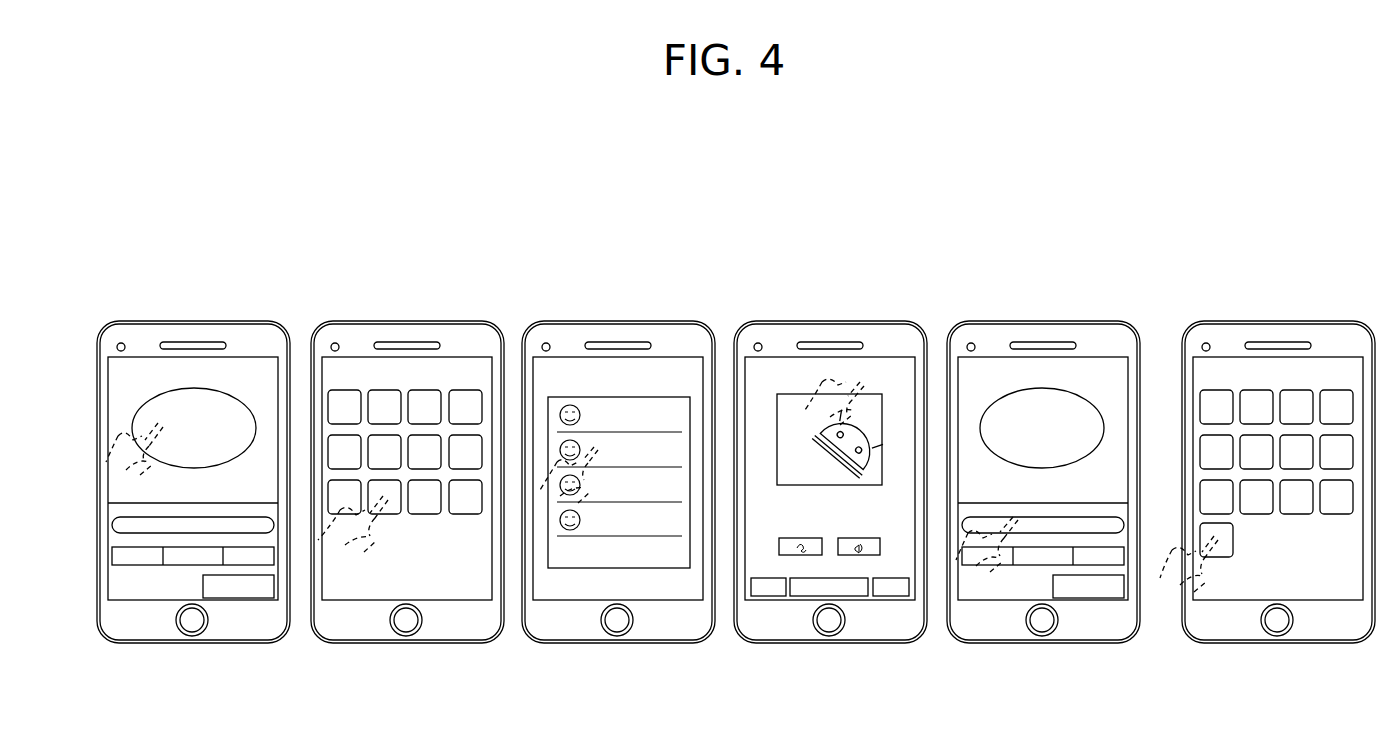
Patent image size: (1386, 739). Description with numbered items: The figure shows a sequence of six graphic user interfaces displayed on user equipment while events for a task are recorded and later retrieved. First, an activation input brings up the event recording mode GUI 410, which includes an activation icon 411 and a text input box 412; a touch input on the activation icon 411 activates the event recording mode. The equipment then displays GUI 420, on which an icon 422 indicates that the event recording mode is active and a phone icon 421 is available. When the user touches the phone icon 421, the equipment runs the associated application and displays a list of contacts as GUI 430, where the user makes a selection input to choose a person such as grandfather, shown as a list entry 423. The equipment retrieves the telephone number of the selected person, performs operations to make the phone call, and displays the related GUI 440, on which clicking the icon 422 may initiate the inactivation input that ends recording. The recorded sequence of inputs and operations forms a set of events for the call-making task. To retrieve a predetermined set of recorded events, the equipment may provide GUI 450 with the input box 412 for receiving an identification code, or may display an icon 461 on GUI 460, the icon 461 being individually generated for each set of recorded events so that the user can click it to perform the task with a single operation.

The event recording mode GUI 410 is at (232, 321).
The activation icon 411 is at (165, 400).
The text input box 412 is at (246, 525).
The GUI 420 is at (426, 321).
The phone icon 421 is at (392, 512).
The icon 422 is at (466, 360).
The contact list item 423 is at (622, 447).
The GUI 430 is at (638, 321).
The GUI 440 is at (850, 321).
The GUI 450 is at (1082, 321).
The GUI 460 is at (1314, 321).
The icon 461 is at (1222, 552).